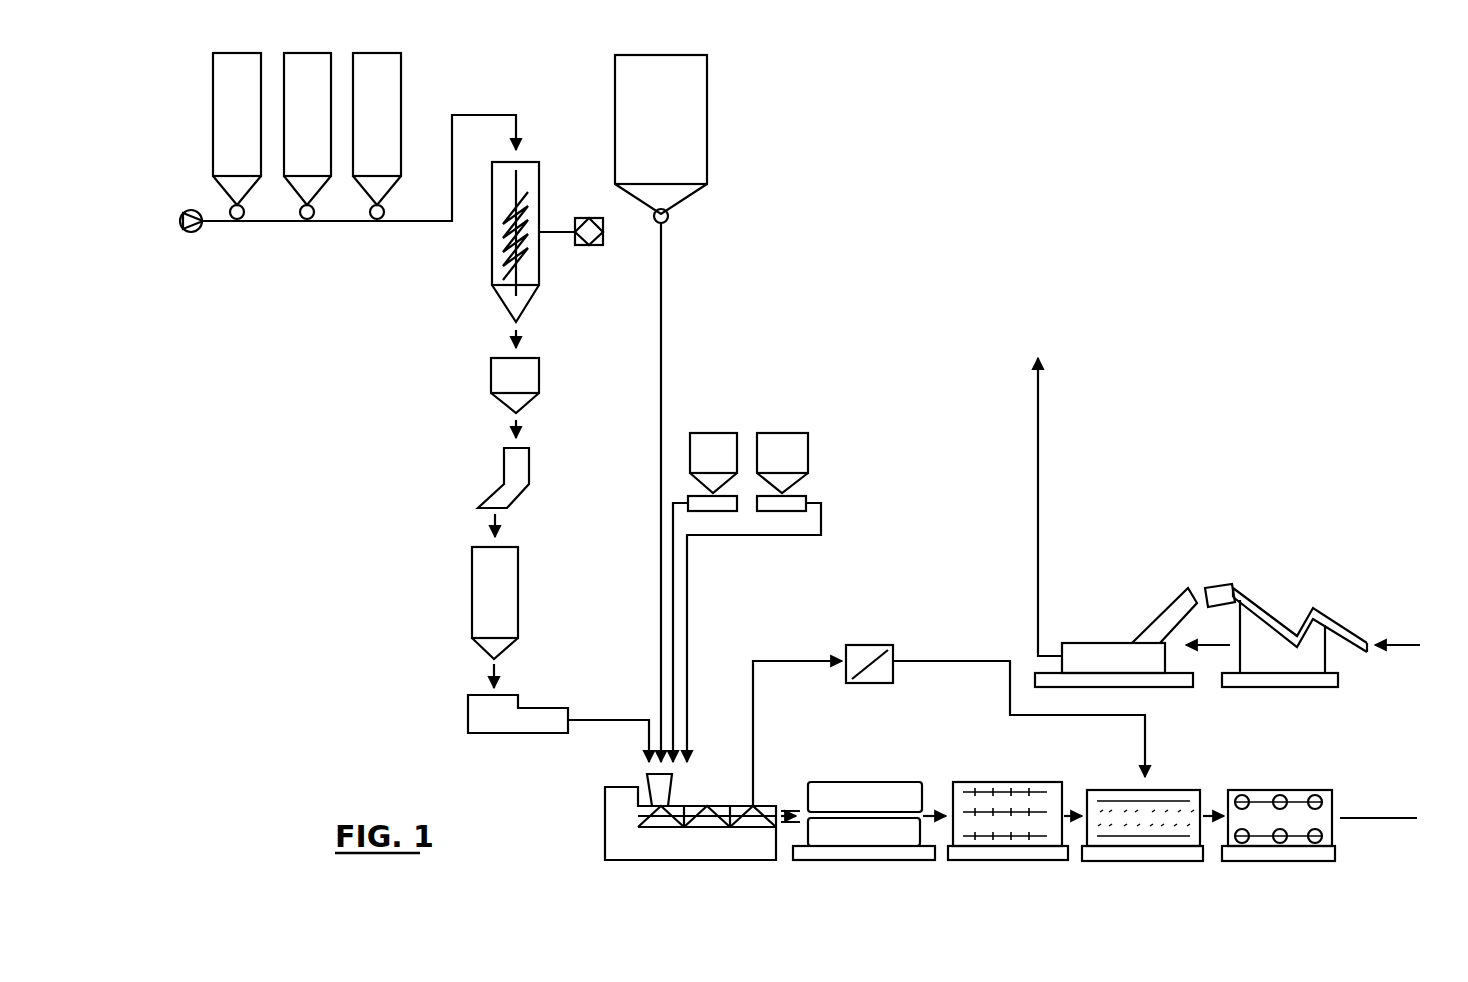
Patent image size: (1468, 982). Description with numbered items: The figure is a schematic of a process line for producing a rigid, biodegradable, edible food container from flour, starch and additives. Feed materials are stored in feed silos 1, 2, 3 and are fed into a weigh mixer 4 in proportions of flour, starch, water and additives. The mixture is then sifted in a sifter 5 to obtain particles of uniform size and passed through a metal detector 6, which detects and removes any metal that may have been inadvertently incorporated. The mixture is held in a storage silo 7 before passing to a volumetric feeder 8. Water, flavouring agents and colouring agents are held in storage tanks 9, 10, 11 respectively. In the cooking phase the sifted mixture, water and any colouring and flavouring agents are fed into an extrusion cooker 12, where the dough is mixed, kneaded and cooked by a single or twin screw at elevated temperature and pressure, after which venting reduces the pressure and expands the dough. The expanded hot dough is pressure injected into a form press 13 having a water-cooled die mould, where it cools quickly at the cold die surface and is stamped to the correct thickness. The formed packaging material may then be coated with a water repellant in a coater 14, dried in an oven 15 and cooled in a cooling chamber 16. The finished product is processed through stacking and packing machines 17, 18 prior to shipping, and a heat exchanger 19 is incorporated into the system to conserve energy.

The feed silo 1 is at (213, 90).
The feed silo 2 is at (284, 90).
The feed silo 3 is at (401, 96).
The weigh mixer 4 is at (549, 258).
The sifter 5 is at (539, 385).
The metal detector 6 is at (529, 480).
The storage silo 7 is at (518, 622).
The volumetric feeder 8 is at (553, 736).
The storage tank 9 is at (707, 130).
The storage tank 10 is at (713, 433).
The storage tank 11 is at (782, 433).
The extrusion cooker 12 is at (605, 824).
The form press 13 is at (878, 781).
The coater 14 is at (1016, 781).
The oven 15 is at (1101, 789).
The cooling chamber 16 is at (1268, 789).
The stacking and packing machine 17 is at (1278, 690).
The stacking and packing machine 18 is at (1187, 689).
The heat exchanger 19 is at (866, 645).